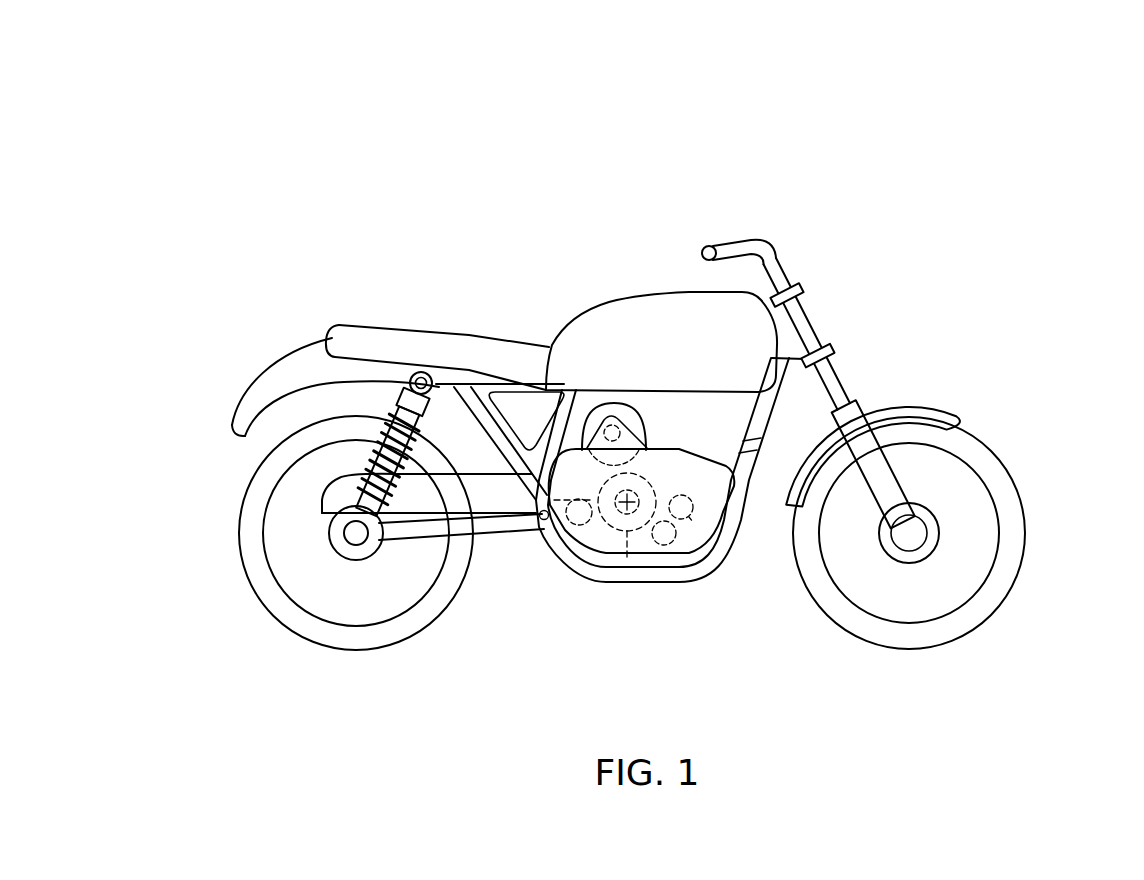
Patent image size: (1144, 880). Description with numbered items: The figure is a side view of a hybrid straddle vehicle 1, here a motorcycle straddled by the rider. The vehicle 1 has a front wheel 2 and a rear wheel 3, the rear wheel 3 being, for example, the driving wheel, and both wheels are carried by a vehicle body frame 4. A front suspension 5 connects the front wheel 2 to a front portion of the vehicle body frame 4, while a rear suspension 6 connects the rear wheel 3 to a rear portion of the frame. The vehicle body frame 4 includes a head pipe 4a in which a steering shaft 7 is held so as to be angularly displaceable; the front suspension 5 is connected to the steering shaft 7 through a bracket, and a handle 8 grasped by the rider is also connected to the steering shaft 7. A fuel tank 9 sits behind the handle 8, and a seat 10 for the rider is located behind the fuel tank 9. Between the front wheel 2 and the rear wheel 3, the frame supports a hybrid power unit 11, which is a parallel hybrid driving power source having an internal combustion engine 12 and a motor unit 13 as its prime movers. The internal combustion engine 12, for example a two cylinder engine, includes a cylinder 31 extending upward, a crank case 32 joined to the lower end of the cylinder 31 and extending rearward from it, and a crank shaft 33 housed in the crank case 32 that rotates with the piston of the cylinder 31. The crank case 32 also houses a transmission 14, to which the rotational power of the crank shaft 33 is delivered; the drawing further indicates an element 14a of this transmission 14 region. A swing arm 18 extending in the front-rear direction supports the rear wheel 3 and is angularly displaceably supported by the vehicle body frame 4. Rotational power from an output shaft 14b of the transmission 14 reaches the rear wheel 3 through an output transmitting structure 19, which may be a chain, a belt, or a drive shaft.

The hybrid straddle vehicle 1 is at (893, 190).
The front wheel 2 is at (1027, 507).
The rear wheel 3 is at (239, 530).
The vehicle body frame 4 is at (762, 398).
The head pipe 4a is at (795, 300).
The front suspension 5 is at (866, 472).
The rear suspension 6 is at (420, 532).
The steering shaft 7 is at (820, 322).
The handle 8 is at (710, 246).
The fuel tank 9 is at (643, 306).
The seat 10 is at (522, 332).
The hybrid power unit 11 is at (725, 468).
The internal combustion engine 12 is at (762, 455).
The motor unit 13 is at (613, 400).
The transmission 14 is at (592, 554).
The crankshaft 14a is at (630, 560).
The output shaft 14b is at (597, 535).
The swing arm 18 is at (495, 517).
The output transmitting structure 19 is at (458, 532).
The cylinder 31 is at (725, 422).
The crank case 32 is at (687, 534).
The crank shaft 33 is at (708, 500).